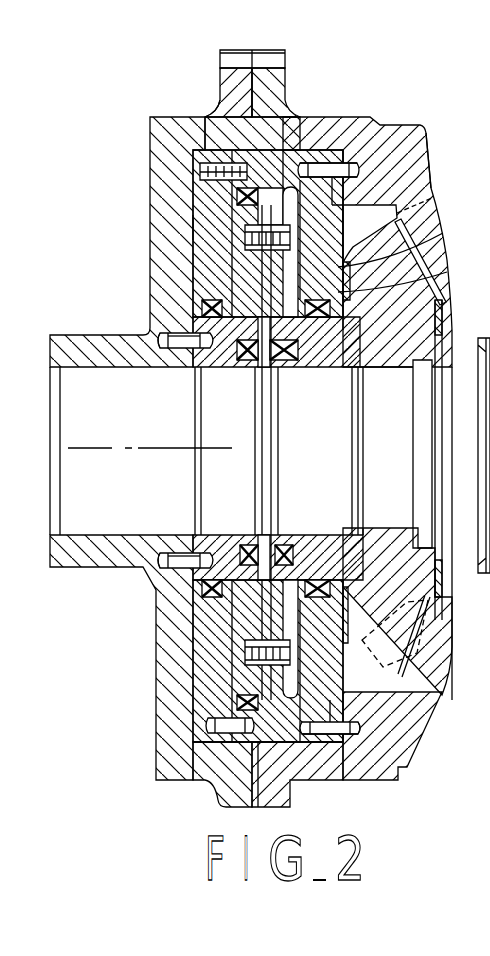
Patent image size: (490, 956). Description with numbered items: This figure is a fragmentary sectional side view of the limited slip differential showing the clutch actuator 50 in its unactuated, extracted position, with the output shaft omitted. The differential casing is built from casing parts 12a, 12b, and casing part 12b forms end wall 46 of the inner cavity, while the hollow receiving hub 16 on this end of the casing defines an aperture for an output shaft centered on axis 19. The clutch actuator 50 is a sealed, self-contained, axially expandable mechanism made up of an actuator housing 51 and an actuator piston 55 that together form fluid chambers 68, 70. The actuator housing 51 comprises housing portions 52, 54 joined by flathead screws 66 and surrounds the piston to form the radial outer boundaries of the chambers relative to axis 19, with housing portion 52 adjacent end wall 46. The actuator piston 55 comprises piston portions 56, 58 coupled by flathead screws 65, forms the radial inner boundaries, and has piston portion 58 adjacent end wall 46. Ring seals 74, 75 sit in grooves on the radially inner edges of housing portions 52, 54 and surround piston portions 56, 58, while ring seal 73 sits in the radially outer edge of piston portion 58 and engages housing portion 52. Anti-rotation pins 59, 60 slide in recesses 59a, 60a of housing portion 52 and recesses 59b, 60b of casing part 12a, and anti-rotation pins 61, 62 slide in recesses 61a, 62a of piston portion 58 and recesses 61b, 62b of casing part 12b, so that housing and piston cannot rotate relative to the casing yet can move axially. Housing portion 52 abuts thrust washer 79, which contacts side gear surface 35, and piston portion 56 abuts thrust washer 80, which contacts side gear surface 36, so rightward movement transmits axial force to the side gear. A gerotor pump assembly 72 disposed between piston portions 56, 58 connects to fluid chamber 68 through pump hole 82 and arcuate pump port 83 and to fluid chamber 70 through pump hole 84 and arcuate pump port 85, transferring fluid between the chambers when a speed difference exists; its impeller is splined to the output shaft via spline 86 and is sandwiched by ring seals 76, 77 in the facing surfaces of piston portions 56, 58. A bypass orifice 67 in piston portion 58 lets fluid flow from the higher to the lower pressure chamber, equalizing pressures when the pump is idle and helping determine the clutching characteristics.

The casing part 12a is at (394, 130).
The casing part 12b is at (197, 200).
The hollow receiving hub 16 is at (93, 335).
The axis 19 is at (112, 448).
The side gear surface 35 is at (444, 242).
The side gear surface 36 is at (441, 314).
The end wall 46 is at (160, 291).
The clutch actuator 50 is at (162, 188).
The actuator housing 51 is at (268, 150).
The housing portion 52 is at (434, 184).
The housing portion 54 is at (195, 186).
The actuator piston 55 is at (330, 367).
The piston portion 56 is at (310, 538).
The piston portion 58 is at (236, 536).
The anti-rotation pin 59 is at (335, 160).
The recess 59a is at (322, 160).
The recess 59b is at (345, 162).
The anti-rotation pin 60 is at (325, 746).
The recess 60a is at (318, 746).
The recess 60b is at (390, 735).
The anti-rotation pin 61 is at (190, 336).
The recess 61a is at (190, 350).
The recess 61b is at (168, 350).
The anti-rotation pin 62 is at (190, 552).
The recess 62a is at (192, 553).
The recess 62b is at (178, 560).
The flathead screws 65 is at (230, 658).
The flathead screws 66 is at (195, 165).
The bypass orifice 67 is at (212, 113).
The fluid chamber 68 is at (205, 684).
The fluid chamber 70 is at (428, 712).
The gerotor pump assembly 72 is at (193, 227).
The ring seal 73 is at (208, 722).
The ring seal 74 is at (356, 533).
The ring seal 75 is at (200, 598).
The ring seal 76 is at (286, 538).
The ring seal 77 is at (242, 538).
The thrust washer 79 is at (447, 268).
The thrust washer 80 is at (362, 377).
The pump hole 82 is at (261, 290).
The arcuate pump port 83 is at (252, 275).
The pump hole 84 is at (346, 272).
The arcuate pump port 85 is at (306, 367).
The spline 86 is at (255, 368).